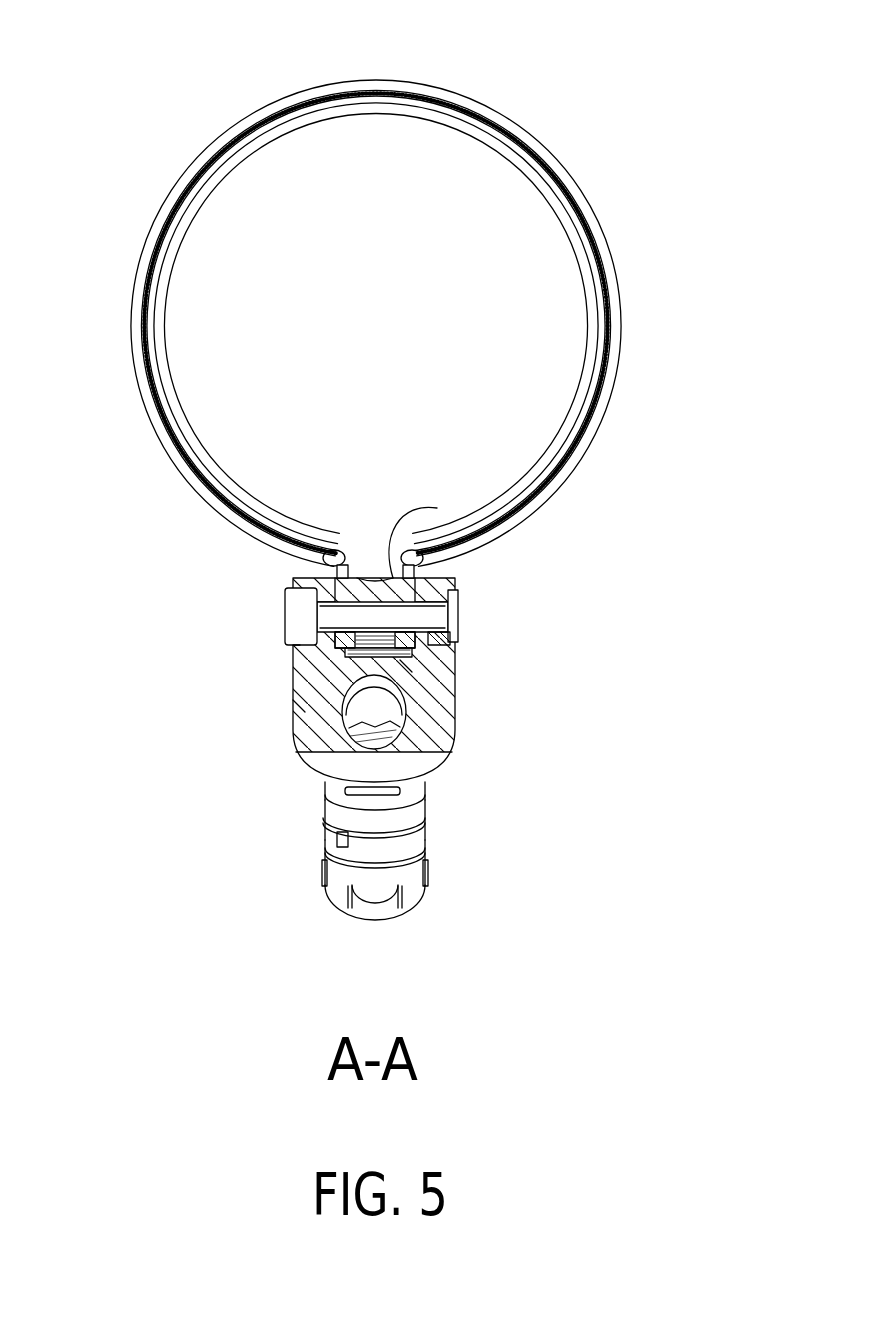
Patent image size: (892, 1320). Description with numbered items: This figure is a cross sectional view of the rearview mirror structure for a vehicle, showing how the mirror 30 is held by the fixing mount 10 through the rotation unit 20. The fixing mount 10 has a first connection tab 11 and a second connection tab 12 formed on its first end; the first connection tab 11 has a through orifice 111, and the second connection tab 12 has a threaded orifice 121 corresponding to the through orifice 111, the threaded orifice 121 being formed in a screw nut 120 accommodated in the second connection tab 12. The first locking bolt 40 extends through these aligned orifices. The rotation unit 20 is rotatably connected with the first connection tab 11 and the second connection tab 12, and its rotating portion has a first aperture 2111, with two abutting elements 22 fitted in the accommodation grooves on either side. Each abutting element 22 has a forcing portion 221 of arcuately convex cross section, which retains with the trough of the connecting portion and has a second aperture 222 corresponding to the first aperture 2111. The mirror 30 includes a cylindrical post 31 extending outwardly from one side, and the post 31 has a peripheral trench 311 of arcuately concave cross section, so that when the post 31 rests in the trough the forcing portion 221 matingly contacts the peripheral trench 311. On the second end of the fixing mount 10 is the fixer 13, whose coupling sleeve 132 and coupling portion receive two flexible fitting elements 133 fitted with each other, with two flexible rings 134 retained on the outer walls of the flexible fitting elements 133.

The mirror 30 is at (474, 115).
The fixing mount 10 is at (298, 737).
The peripheral trench 311 is at (357, 578).
The forcing portion 221 is at (437, 508).
The abutting element 22 is at (337, 568).
The first connection tab 11 is at (296, 585).
The second connection tab 12 is at (458, 586).
The post 31 is at (383, 582).
The screw nut 120 is at (455, 642).
The threaded orifice 121 is at (450, 638).
The rotation unit 20 is at (333, 657).
The first locking bolt 40 is at (284, 618).
The through orifice 111 is at (298, 647).
The second aperture 222 is at (297, 708).
The first aperture 2111 is at (396, 656).
The fixer 13 is at (373, 886).
The flexible ring 134 is at (345, 838).
The flexible fitting element 133 is at (360, 873).
The coupling sleeve 132 is at (387, 912).